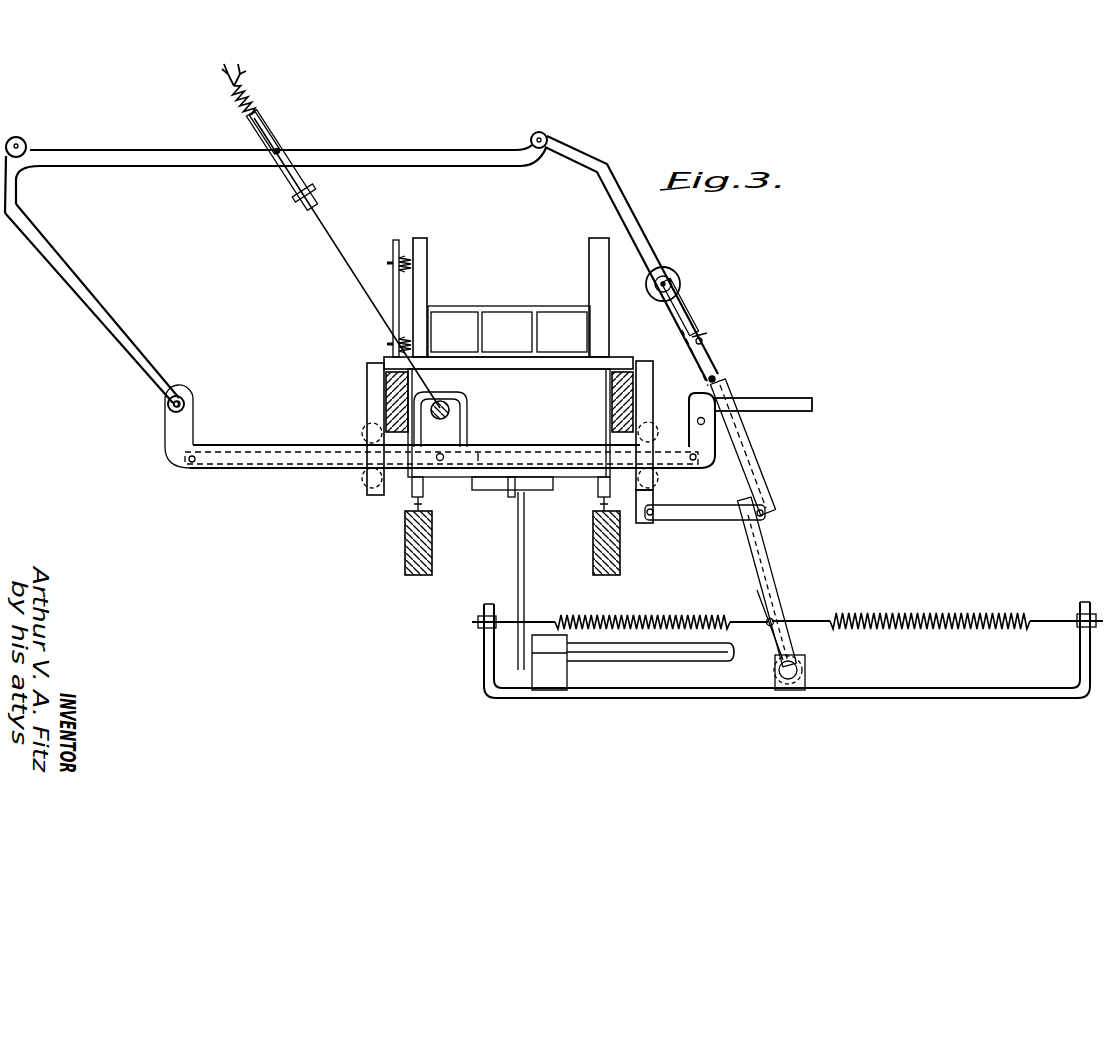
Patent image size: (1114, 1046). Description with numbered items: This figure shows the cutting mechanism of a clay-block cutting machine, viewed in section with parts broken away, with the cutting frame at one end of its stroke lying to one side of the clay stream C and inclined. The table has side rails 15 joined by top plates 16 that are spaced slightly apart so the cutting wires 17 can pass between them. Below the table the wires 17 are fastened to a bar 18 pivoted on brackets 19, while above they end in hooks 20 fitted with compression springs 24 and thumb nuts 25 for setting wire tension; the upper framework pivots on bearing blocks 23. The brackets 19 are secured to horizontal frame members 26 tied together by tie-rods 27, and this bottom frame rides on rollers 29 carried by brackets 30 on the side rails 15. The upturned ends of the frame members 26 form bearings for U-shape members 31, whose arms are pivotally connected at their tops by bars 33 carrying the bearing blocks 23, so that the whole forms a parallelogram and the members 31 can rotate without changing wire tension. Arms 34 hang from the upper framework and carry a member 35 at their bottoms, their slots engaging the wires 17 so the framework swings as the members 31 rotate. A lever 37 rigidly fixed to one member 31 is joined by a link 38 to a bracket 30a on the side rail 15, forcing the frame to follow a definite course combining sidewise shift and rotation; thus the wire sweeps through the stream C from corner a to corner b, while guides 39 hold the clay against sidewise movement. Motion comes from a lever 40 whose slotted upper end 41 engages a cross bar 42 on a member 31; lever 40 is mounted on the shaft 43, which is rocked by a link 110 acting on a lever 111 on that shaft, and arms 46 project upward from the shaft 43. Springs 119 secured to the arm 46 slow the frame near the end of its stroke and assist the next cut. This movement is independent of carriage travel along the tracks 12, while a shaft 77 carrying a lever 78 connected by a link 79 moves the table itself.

The tracks 12 is at (404, 552).
The side rails 15 is at (388, 396).
The top plates 16 is at (530, 375).
The cutting wires 17 is at (325, 240).
The bar 18 is at (449, 409).
The brackets 19 is at (462, 398).
The hooks 20 is at (283, 142).
The bearing blocks 23 is at (281, 152).
The compression springs 24 is at (256, 96).
The thumb nuts 25 is at (245, 71).
The horizontal frame members 26 is at (172, 452).
The tie-rods 27 is at (193, 463).
The rollers 29 is at (362, 433).
The brackets 30 is at (370, 373).
The bracket 30a is at (644, 522).
The U-shape members 31 is at (128, 356).
The bars 33 is at (186, 140).
The arms 34 is at (278, 178).
The member 35 is at (317, 190).
The lever 37 is at (755, 490).
The link 38 is at (710, 518).
The guides 39 is at (428, 263).
The lever 40 is at (706, 327).
The slotted upper end 41 is at (692, 308).
The cross bar 42 is at (673, 280).
The shaft 43 is at (788, 672).
The arms 46 is at (770, 556).
The shaft 77 is at (634, 658).
The lever 78 is at (517, 572).
The link 79 is at (507, 497).
The link 110 is at (790, 393).
The lever 111 is at (794, 613).
The springs 119 is at (672, 606).
The clay stream C is at (508, 306).
The corner a is at (450, 338).
The corner b is at (590, 352).